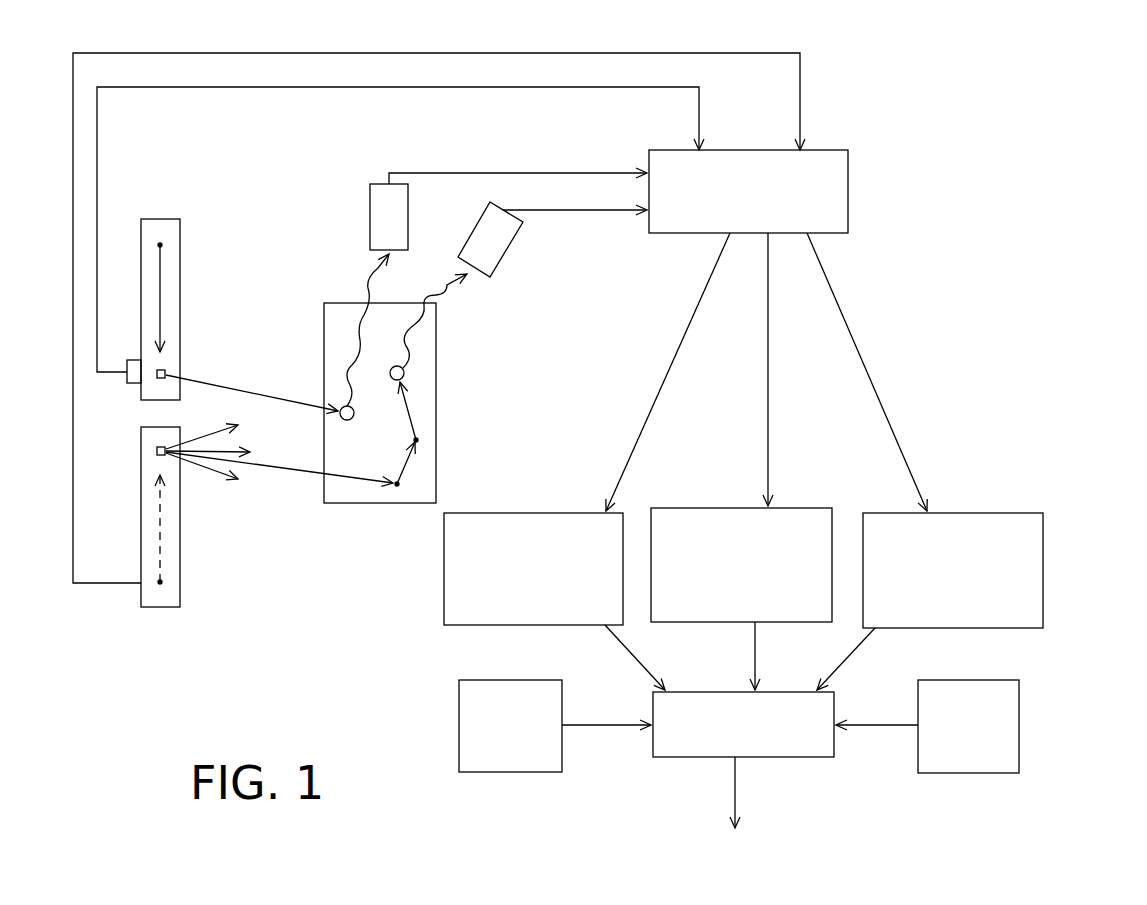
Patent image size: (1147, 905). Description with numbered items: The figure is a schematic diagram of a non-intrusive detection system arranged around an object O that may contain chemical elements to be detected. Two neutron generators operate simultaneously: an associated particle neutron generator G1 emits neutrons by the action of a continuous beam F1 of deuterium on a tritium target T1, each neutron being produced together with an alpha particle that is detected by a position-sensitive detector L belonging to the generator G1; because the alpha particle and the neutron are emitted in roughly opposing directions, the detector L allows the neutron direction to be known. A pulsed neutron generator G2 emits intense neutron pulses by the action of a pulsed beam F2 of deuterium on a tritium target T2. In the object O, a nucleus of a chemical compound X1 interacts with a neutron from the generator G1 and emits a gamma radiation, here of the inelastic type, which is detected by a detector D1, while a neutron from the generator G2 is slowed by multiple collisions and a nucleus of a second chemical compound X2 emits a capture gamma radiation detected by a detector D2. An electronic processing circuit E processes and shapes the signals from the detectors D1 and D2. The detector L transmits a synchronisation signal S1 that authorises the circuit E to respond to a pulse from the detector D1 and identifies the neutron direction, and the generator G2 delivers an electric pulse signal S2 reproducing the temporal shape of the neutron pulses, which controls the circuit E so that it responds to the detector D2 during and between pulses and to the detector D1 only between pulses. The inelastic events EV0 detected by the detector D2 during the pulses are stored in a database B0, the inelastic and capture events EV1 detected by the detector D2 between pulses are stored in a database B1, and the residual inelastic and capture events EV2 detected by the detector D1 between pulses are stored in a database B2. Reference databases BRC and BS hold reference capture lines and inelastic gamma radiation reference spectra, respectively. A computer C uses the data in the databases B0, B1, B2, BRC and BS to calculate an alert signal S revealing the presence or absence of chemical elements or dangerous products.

The associated particle neutron generator G1 is at (160, 215).
The continuous beam of deuterium F1 is at (163, 280).
The position-sensitive detector L is at (133, 358).
The tritium target T1 is at (168, 372).
The tritium target T2 is at (156, 452).
The pulsed beam of deuterium F2 is at (163, 536).
The pulsed neutron generator G2 is at (160, 600).
The object O is at (347, 493).
The chemical compound X1 is at (340, 407).
The second chemical compound X2 is at (405, 375).
The detector D1 is at (372, 213).
The detector D2 is at (505, 250).
The electronic processing circuit E is at (835, 195).
The synchronisation signal S1 is at (398, 229).
The electric pulse signal S2 is at (452, 318).
The inelastic events EV0 is at (688, 333).
The inelastic and capture events EV1 is at (769, 427).
The residual inelastic and capture events EV2 is at (853, 331).
The database B0 is at (450, 578).
The database B1 is at (704, 525).
The database B2 is at (1035, 575).
The reference database BRC is at (465, 725).
The reference database BS is at (1003, 722).
The computer C is at (790, 745).
The alert signal S is at (785, 800).